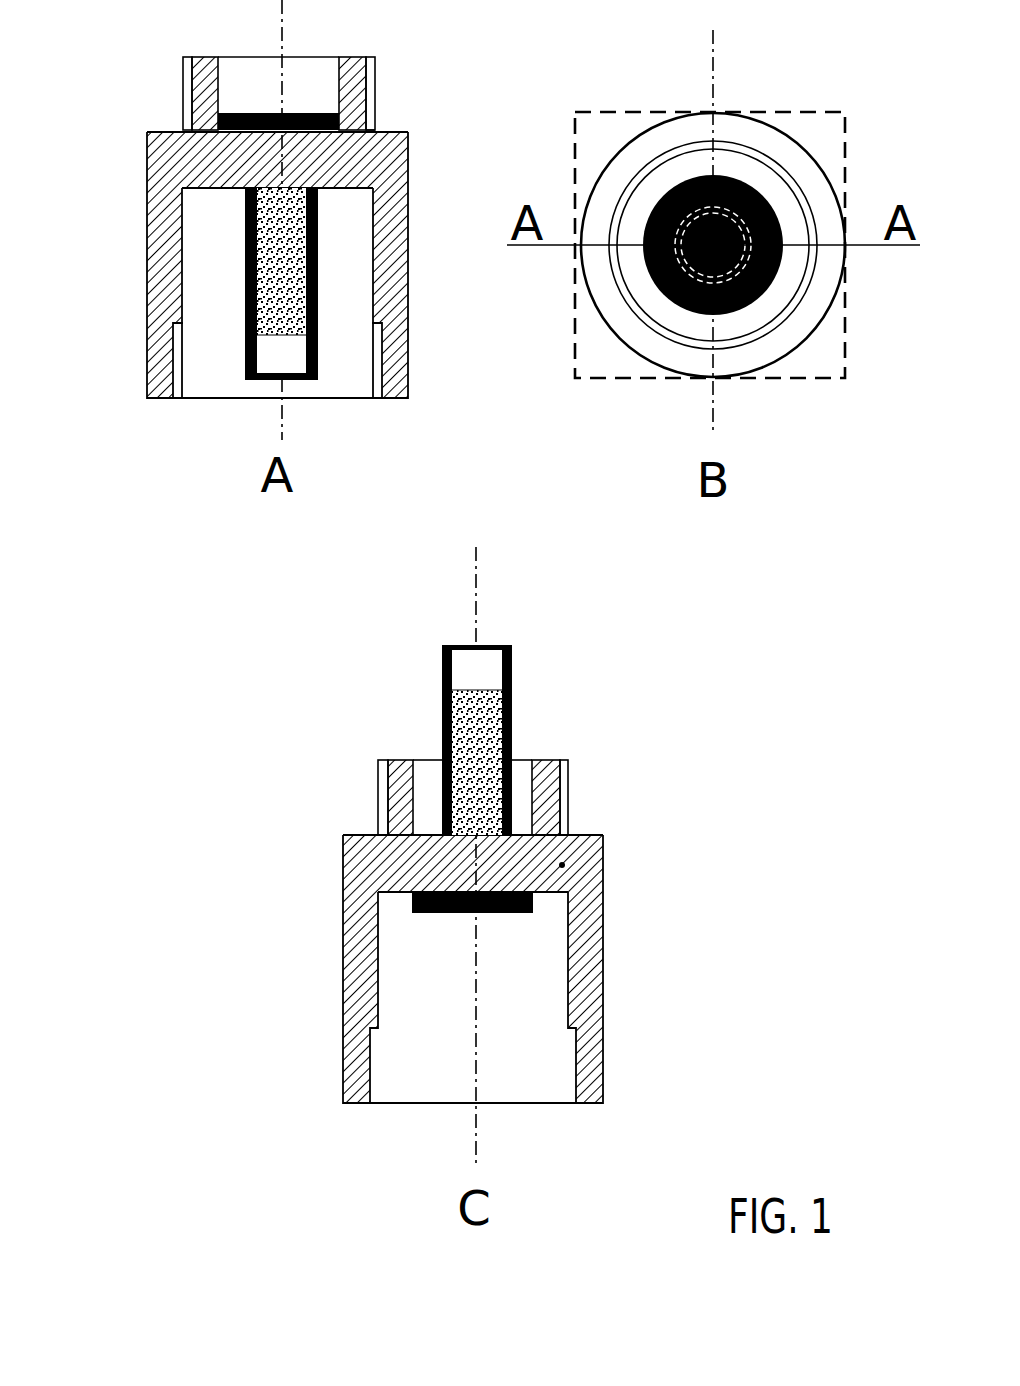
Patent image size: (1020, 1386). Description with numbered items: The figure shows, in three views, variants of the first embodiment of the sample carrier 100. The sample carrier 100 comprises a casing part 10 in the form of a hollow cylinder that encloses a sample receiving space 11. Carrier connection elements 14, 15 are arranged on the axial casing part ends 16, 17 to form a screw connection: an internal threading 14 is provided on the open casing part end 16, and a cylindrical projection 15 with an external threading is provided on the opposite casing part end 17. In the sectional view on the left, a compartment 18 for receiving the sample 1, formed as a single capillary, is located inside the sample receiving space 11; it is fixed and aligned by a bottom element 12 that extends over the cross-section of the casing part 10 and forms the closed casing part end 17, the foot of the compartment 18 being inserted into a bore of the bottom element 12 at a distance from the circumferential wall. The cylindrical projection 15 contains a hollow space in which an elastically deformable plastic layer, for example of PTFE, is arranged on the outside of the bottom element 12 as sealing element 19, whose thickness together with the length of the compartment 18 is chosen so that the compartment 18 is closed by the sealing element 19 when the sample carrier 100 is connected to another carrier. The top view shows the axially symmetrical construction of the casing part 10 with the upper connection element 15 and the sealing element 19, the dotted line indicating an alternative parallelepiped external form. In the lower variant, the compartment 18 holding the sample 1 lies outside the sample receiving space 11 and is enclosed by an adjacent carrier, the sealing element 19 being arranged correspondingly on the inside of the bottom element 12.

The sample carrier 100 is at (28, 161).
The sample 1 is at (284, 337).
The casing part 10 is at (167, 242).
The sample receiving space 11 is at (328, 302).
The bottom element 12 is at (197, 153).
The internal threading 14 is at (377, 388).
The cylindrical projection 15 is at (185, 65).
The open casing part end 16 is at (147, 363).
The closed casing part end 17 is at (385, 127).
The compartment 18 is at (247, 253).
The sealing element 19 is at (269, 113).